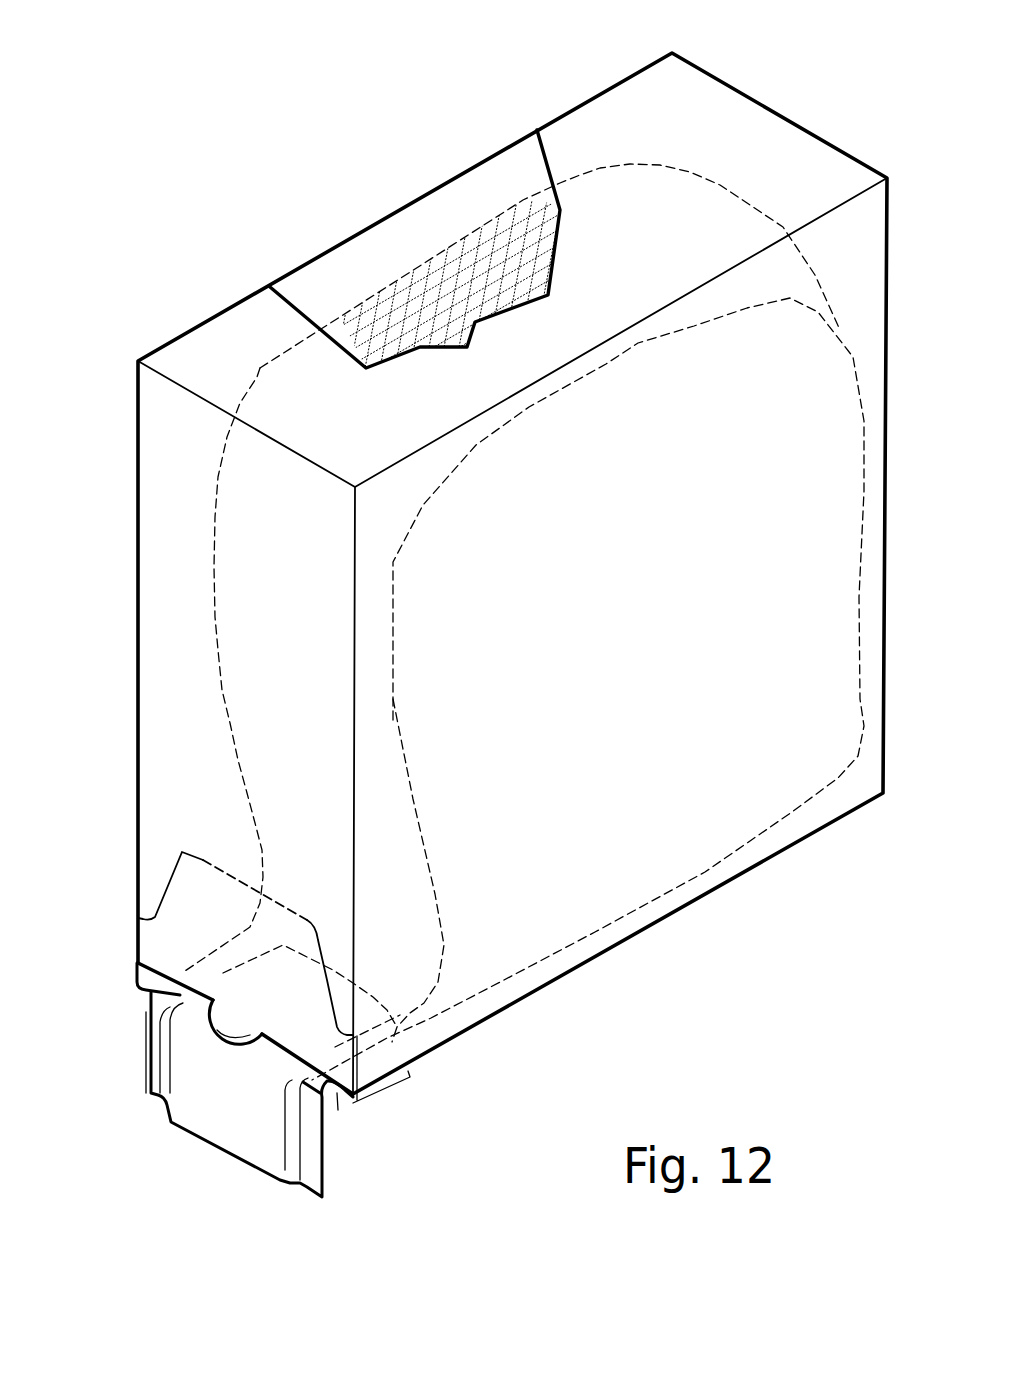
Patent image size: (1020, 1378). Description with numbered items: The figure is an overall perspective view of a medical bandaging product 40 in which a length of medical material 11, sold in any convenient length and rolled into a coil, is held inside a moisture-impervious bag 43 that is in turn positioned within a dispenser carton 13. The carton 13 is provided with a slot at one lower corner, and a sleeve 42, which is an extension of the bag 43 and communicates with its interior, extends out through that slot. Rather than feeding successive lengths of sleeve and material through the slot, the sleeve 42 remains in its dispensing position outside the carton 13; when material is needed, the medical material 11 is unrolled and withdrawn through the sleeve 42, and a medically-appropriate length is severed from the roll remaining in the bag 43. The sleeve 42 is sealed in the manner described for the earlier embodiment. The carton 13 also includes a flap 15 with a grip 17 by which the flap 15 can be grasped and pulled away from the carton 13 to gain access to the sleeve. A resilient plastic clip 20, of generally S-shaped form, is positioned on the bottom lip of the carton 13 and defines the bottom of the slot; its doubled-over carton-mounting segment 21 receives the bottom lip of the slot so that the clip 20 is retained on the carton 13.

The medical bandaging product 40 is at (250, 240).
The dispenser carton 13 is at (672, 133).
The medical material 11 is at (463, 262).
The sleeve 42 is at (232, 513).
The flap 15 is at (208, 920).
The bag 43 is at (146, 1016).
The grip 17 is at (235, 1028).
The clip 20 is at (337, 1093).
The carton-mounting segment 21 is at (383, 1090).